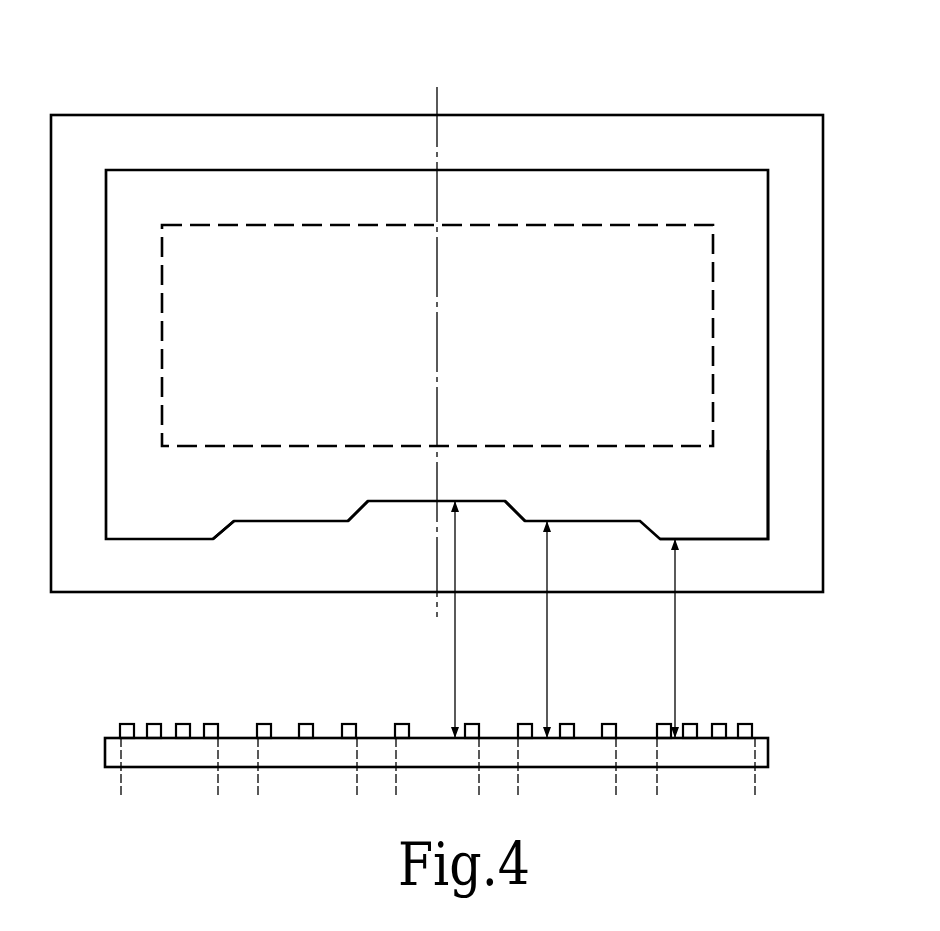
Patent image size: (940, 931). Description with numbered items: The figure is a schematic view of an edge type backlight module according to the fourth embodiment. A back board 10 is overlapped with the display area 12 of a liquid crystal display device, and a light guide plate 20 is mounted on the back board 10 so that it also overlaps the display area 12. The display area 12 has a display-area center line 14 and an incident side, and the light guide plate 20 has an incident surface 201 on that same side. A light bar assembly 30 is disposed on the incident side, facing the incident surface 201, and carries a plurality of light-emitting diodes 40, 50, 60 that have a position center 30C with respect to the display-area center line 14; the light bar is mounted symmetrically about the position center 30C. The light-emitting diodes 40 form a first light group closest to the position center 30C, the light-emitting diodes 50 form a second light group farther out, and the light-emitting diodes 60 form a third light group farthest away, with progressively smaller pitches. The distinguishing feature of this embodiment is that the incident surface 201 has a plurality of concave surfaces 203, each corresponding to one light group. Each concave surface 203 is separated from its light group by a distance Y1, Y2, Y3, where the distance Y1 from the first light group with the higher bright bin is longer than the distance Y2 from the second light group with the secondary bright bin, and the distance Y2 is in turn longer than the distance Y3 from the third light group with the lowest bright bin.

The back board 10 is at (655, 115).
The display area 12 is at (492, 225).
The display-area center line 14 is at (437, 103).
The light guide plate 20 is at (572, 170).
The incident surface 201 is at (750, 560).
The concave surface 203 is at (164, 539).
The light bar assembly 30 is at (777, 754).
The position center 30C is at (438, 738).
The light-emitting diode 40 is at (400, 723).
The light-emitting diode 50 is at (306, 723).
The light-emitting diode 60 is at (212, 723).
The distance Y1 is at (478, 619).
The distance Y2 is at (570, 629).
The distance Y3 is at (697, 638).